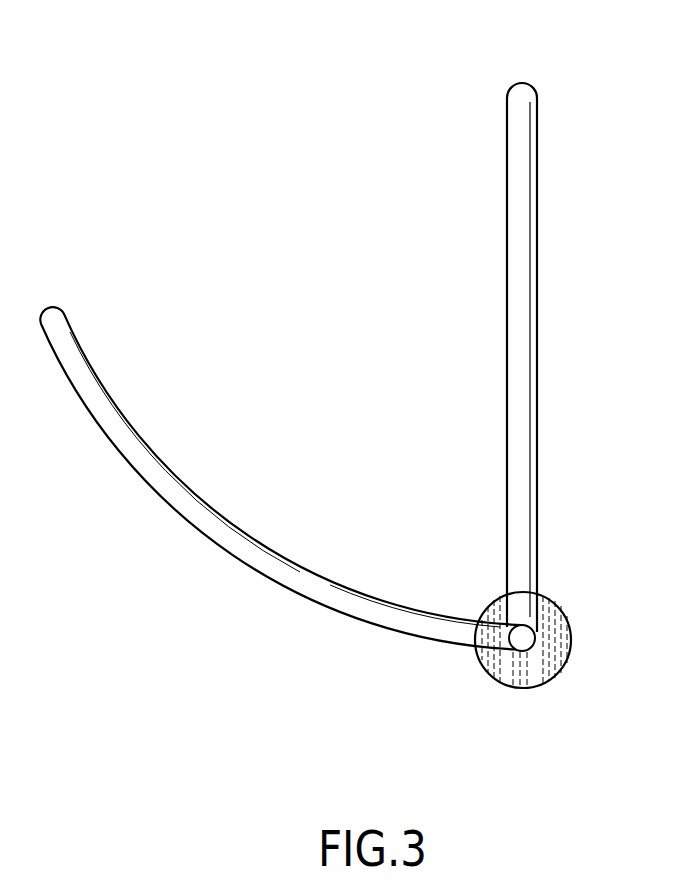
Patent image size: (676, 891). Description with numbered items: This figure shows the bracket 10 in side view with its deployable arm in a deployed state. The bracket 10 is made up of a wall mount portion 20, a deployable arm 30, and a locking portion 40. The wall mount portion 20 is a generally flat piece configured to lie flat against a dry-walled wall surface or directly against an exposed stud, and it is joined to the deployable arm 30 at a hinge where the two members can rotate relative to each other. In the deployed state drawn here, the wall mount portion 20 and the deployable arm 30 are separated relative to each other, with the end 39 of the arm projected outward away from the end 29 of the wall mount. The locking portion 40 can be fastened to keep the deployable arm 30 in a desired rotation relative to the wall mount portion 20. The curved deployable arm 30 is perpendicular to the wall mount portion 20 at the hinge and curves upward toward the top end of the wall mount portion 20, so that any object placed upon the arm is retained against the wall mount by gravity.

The bracket 10 is at (535, 117).
The wall mount portion 20 is at (538, 400).
The end 29 is at (522, 98).
The deployable arm 30 is at (277, 581).
The end 39 is at (55, 322).
The locking portion 40 is at (568, 623).